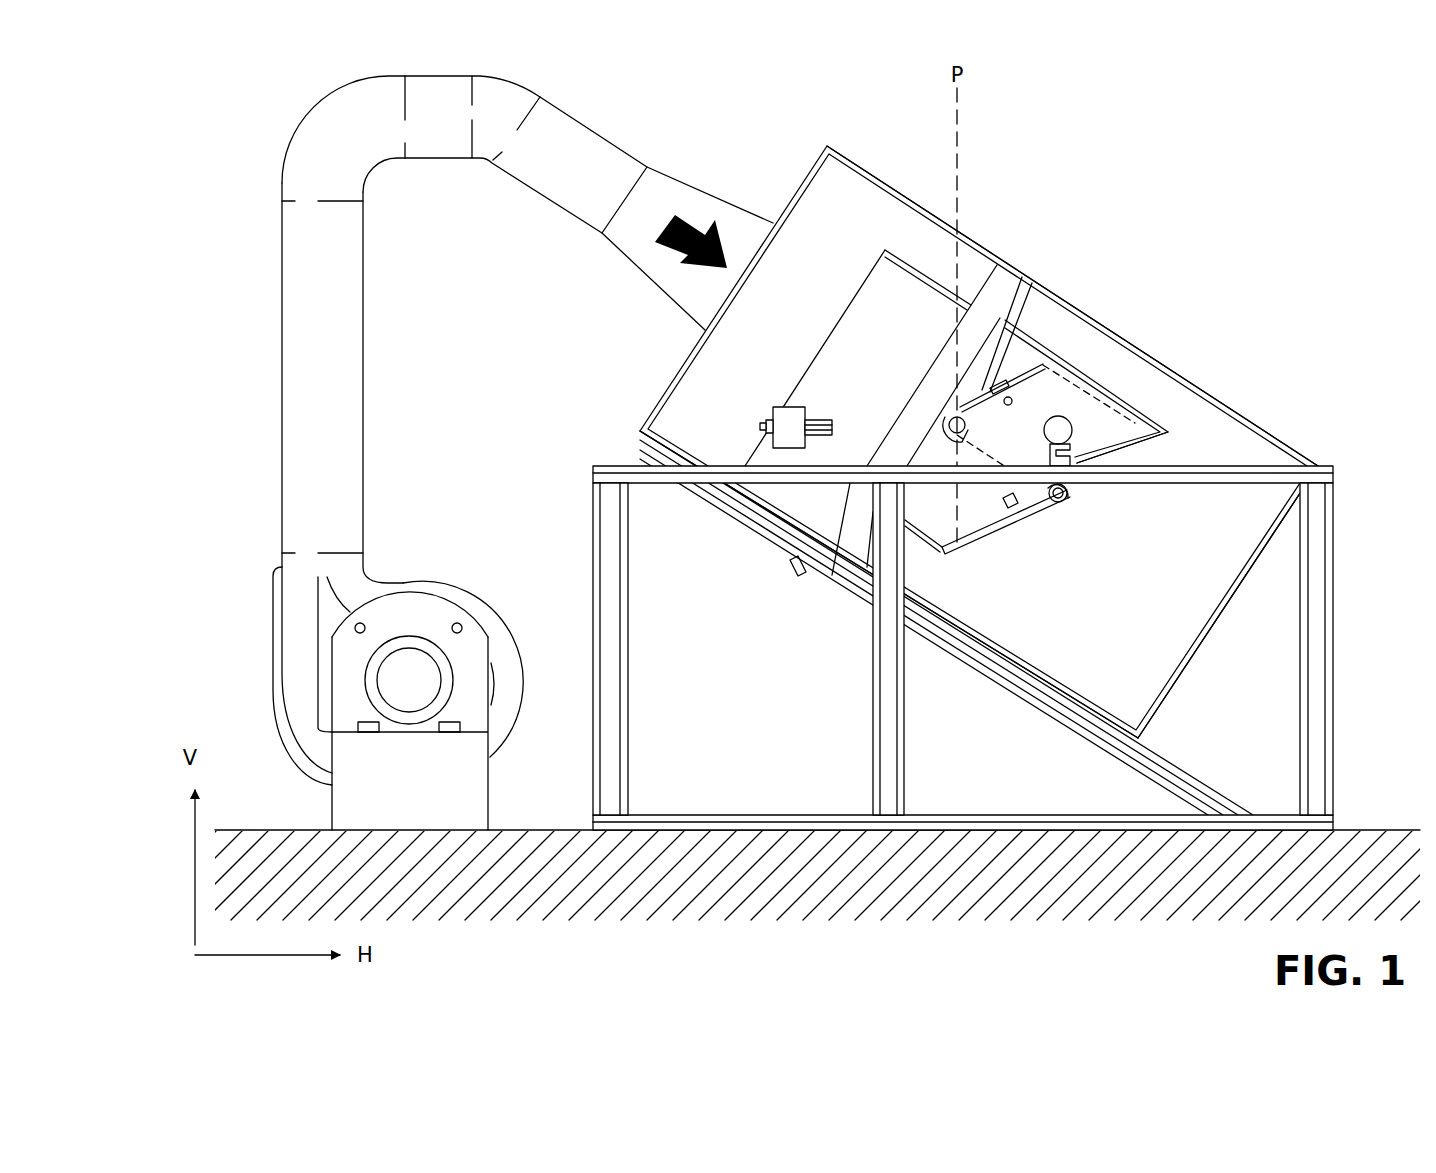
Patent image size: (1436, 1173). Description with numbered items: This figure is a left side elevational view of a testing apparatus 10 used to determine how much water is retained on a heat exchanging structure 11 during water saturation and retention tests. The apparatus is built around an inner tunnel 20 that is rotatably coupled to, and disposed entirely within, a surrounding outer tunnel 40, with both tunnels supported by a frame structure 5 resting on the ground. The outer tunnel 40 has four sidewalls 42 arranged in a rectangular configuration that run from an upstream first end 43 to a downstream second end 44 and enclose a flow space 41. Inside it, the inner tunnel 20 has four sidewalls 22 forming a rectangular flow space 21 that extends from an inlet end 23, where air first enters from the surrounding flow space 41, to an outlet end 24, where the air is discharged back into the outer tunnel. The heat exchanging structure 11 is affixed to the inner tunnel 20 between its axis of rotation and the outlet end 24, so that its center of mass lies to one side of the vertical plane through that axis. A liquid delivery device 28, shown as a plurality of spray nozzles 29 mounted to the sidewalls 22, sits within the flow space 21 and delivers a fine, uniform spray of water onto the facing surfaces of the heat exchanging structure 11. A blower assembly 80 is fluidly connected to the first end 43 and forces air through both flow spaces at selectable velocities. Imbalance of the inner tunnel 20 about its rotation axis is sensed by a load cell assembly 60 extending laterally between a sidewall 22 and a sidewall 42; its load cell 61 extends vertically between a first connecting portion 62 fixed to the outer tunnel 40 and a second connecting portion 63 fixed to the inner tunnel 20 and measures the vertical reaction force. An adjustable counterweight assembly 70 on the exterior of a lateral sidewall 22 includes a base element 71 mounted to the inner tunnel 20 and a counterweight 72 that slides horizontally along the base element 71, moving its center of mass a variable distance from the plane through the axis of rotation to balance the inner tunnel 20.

The frame structure 5 is at (1322, 680).
The testing apparatus 10 is at (987, 487).
The heat exchanging structure 11 is at (1115, 450).
The inner tunnel 20 is at (920, 268).
The flow space 21 is at (914, 420).
The sidewalls 22 is at (1032, 335).
The inlet end 23 is at (838, 320).
The outlet end 24 is at (998, 528).
The liquid delivery device 28 is at (1000, 372).
The spray nozzles 29 is at (1050, 370).
The outer tunnel 40 is at (880, 175).
The flow space 41 is at (745, 349).
The sidewalls 42 is at (1200, 375).
The first end 43 is at (798, 190).
The second end 44 is at (1190, 665).
The load cell assembly 60 is at (1074, 510).
The load cell 61 is at (1078, 466).
The first connecting portion 62 is at (1058, 430).
The second connecting portion 63 is at (1062, 500).
The adjustable counterweight assembly 70 is at (779, 419).
The base element 71 is at (828, 418).
The counterweight 72 is at (770, 412).
The blower assembly 80 is at (255, 658).